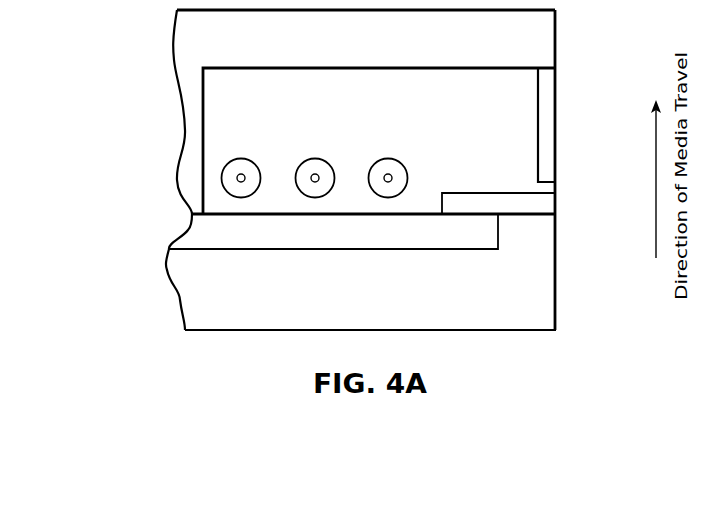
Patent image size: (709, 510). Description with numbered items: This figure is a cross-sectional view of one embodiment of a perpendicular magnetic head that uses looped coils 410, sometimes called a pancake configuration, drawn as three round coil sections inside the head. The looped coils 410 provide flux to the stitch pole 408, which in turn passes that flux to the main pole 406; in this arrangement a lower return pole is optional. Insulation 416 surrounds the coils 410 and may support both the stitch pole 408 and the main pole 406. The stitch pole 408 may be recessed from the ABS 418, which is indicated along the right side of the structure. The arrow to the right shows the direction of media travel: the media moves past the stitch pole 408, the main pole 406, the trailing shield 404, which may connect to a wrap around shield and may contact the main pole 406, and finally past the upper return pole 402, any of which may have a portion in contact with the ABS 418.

The upper return pole 402 is at (361, 170).
The trailing shield 404 is at (557, 102).
The main pole 406 is at (557, 198).
The stitch pole 408 is at (333, 231).
The looped coils 410 is at (244, 159).
The insulation 416 is at (373, 141).
The ABS 418 is at (557, 30).